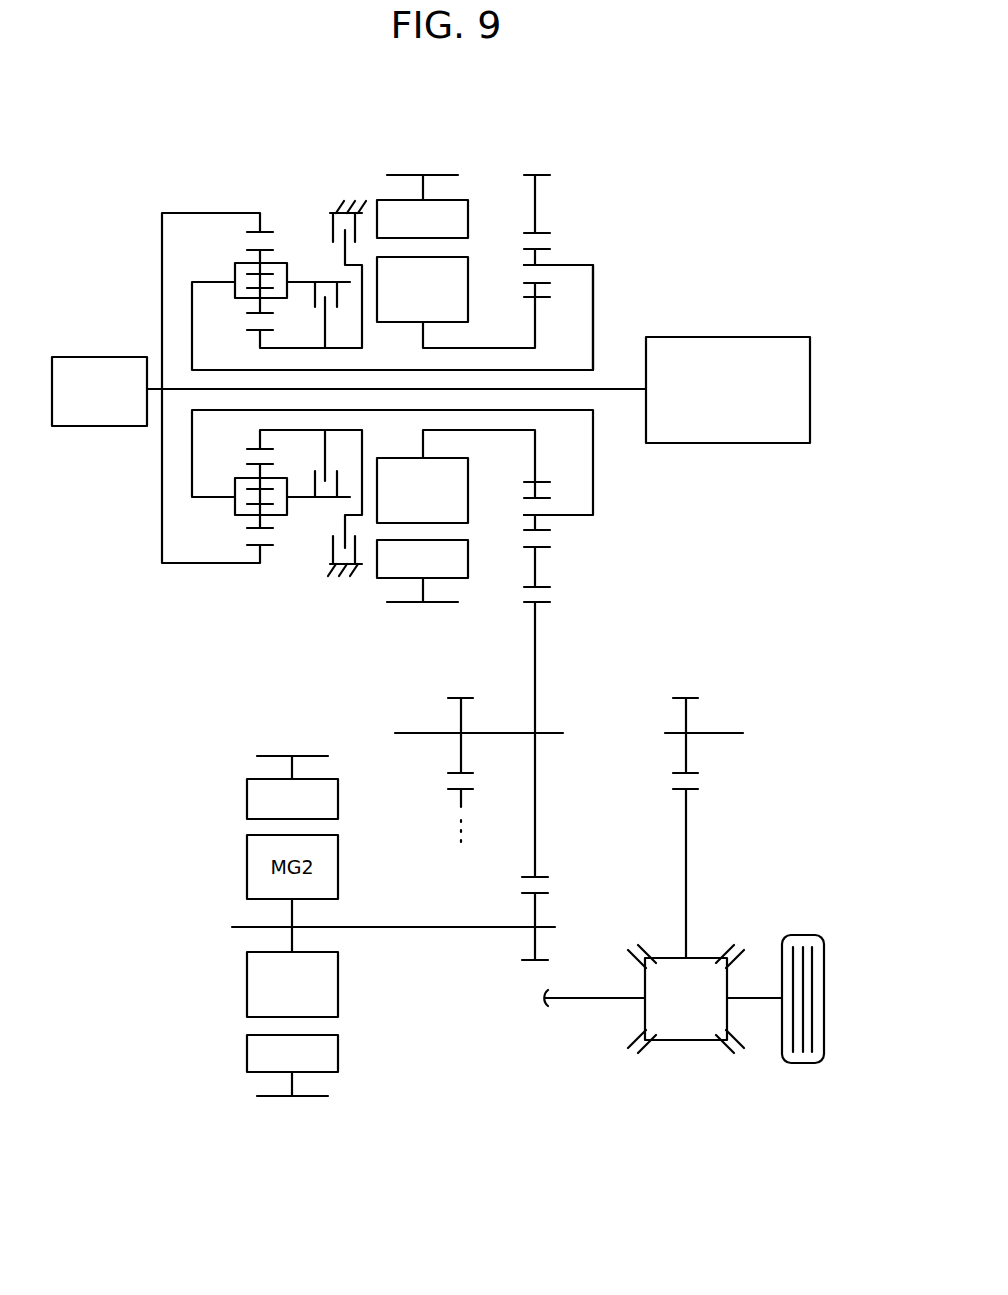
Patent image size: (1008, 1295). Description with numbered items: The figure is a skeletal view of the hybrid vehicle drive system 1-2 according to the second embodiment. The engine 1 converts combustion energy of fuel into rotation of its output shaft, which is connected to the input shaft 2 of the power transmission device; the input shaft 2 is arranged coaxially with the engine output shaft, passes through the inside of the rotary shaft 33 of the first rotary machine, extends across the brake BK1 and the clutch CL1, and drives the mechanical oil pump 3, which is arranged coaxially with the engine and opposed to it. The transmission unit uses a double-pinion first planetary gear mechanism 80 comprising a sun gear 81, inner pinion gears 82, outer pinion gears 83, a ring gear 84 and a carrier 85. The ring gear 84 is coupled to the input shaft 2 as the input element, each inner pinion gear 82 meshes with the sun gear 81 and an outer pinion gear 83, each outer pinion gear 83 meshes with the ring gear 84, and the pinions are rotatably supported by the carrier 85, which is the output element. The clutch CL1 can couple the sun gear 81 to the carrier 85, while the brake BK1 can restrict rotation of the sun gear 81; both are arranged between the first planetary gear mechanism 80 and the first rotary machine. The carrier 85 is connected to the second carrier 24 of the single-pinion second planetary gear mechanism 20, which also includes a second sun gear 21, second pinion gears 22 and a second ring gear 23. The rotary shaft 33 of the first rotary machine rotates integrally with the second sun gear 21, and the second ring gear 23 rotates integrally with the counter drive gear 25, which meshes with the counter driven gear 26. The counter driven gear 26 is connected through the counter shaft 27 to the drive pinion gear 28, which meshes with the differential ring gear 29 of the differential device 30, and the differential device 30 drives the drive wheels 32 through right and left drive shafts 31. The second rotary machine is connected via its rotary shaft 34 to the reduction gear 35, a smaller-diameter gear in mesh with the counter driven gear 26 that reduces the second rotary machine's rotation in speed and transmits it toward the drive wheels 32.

The engine 1 is at (786, 337).
The hybrid vehicle drive system 1-2 is at (574, 145).
The input shaft 2 is at (614, 387).
The mechanical oil pump 3 is at (70, 357).
The second planetary gear mechanism 20 is at (576, 222).
The second sun gear 21 is at (546, 291).
The second pinion gears 22 is at (524, 283).
The second ring gear 23 is at (524, 236).
The second carrier 24 is at (570, 264).
The counter drive gear 25 is at (552, 590).
The counter driven gear 26 is at (525, 601).
The counter shaft 27 is at (490, 732).
The drive pinion gear 28 is at (465, 697).
The differential ring gear 29 is at (476, 786).
The differential device 30 is at (714, 938).
The drive shafts 31 is at (750, 996).
The drive wheels 32 is at (800, 934).
The rotary shaft of the first rotary machine 33 is at (485, 348).
The rotary shaft of the second rotary machine 34 is at (380, 925).
The reduction gear 35 is at (552, 893).
The first planetary gear mechanism 80 is at (242, 203).
The sun gear 81 is at (250, 328).
The inner pinion gears 82 is at (250, 315).
The outer pinion gears 83 is at (272, 281).
The ring gear 84 is at (247, 236).
The carrier 85 is at (204, 284).
The brake BK1 is at (318, 232).
The clutch CL1 is at (350, 307).